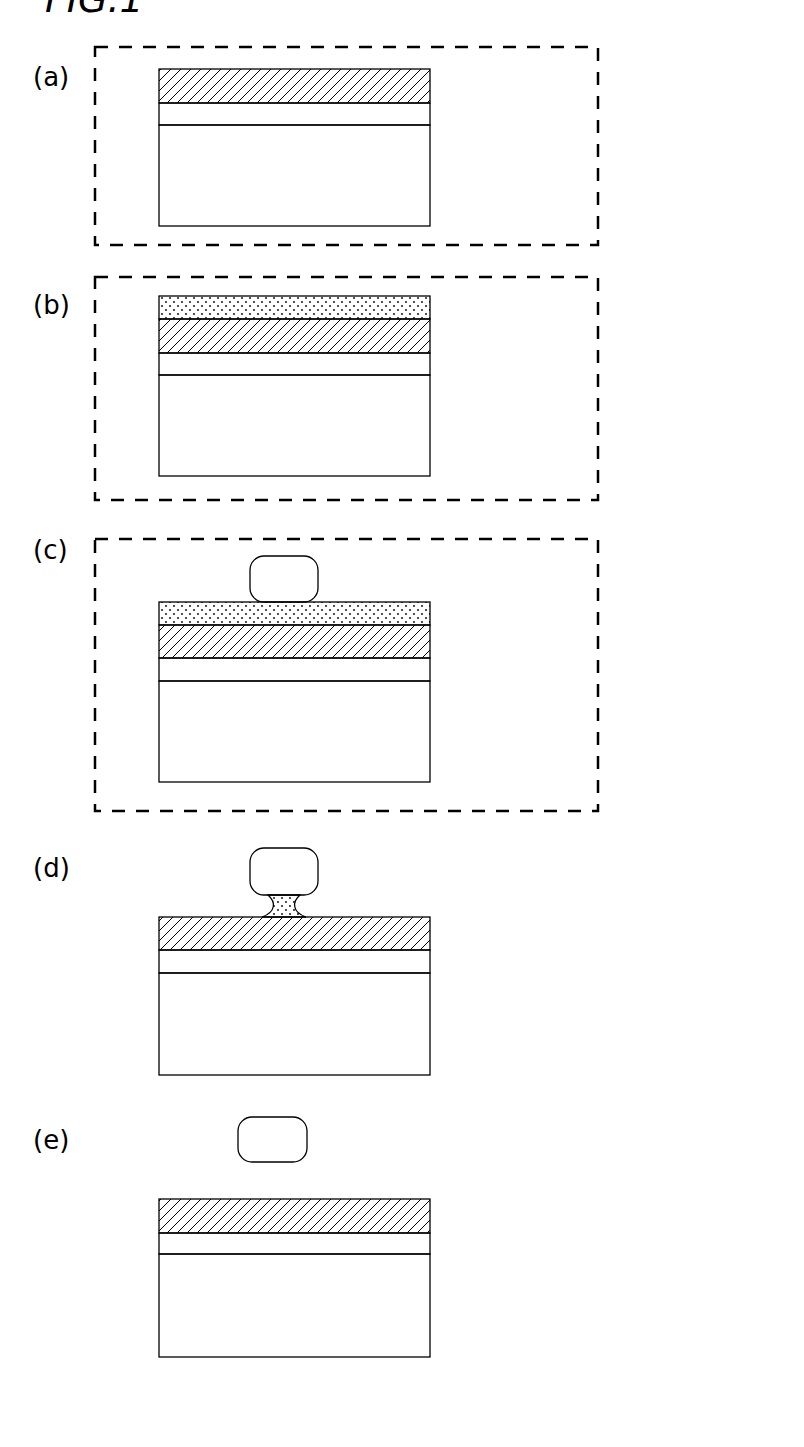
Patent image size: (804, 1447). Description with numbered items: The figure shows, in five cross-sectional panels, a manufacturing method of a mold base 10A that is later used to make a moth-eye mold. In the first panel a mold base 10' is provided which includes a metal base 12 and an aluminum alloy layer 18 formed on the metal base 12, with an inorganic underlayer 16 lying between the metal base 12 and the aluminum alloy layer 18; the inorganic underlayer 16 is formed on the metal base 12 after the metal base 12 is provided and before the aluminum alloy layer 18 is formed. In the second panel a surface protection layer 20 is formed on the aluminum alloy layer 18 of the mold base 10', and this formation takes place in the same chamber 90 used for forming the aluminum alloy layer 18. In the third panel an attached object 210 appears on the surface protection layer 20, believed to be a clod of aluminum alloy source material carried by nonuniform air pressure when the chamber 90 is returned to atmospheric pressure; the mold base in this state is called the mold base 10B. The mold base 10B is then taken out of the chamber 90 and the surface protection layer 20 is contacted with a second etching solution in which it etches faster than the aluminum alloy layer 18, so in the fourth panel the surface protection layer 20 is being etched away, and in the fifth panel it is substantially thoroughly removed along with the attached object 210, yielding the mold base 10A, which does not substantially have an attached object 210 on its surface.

The metal base 12 is at (403, 181).
The inorganic underlayer 16 is at (403, 120).
The aluminum alloy layer 18 is at (405, 92).
The surface protection layer 20 is at (405, 313).
The chamber 90 is at (598, 97).
The attached object 210 is at (312, 586).
The mold base 10' is at (550, 102).
The mold base 10B is at (516, 640).
The mold base 10A is at (536, 1235).